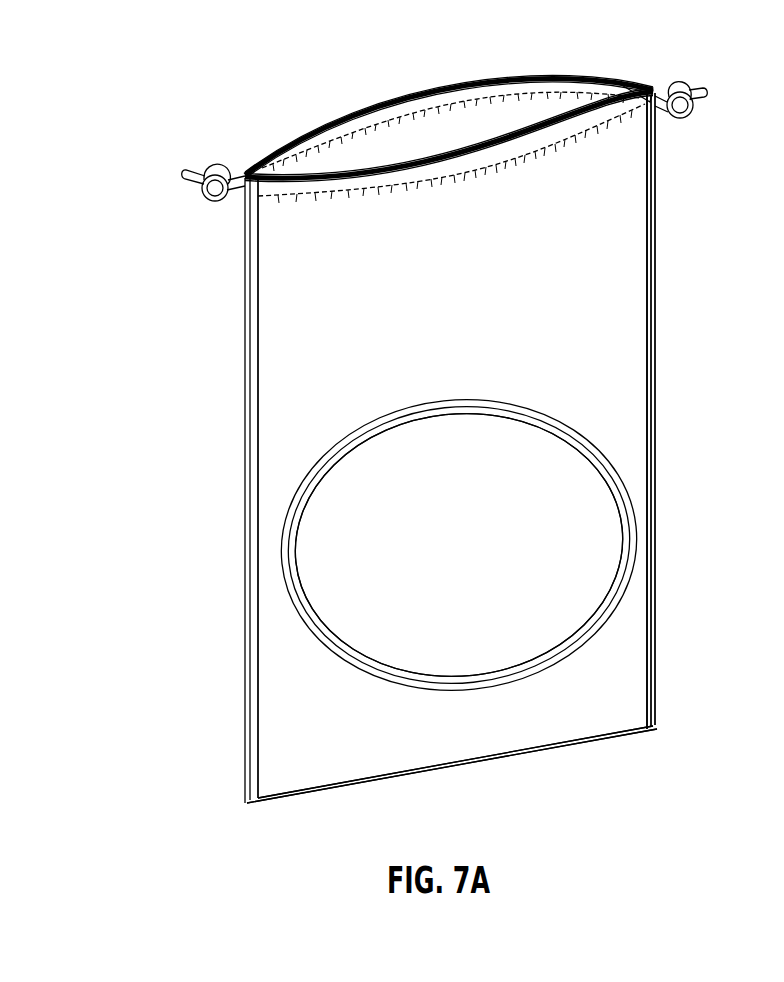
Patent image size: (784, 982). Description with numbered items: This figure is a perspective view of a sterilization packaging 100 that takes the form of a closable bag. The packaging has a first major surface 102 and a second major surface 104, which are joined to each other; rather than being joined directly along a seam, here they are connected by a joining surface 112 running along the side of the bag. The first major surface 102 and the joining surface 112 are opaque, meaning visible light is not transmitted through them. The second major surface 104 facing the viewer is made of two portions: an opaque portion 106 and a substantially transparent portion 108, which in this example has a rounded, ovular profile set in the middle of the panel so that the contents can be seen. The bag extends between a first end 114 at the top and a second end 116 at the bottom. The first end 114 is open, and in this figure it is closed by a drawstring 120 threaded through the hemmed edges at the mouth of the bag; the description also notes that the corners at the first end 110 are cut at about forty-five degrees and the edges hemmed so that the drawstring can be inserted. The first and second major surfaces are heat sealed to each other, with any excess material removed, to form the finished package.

The sterilization packaging 100 is at (616, 277).
The first major surface 102 is at (658, 328).
The second major surface 104 is at (632, 587).
The opaque portion 106 is at (633, 367).
The substantially transparent portion 108 is at (557, 618).
The first end 110 is at (405, 103).
The joining surface 112 is at (655, 488).
The first end 114 is at (478, 145).
The second end 116 is at (517, 757).
The drawstring 120 is at (210, 194).